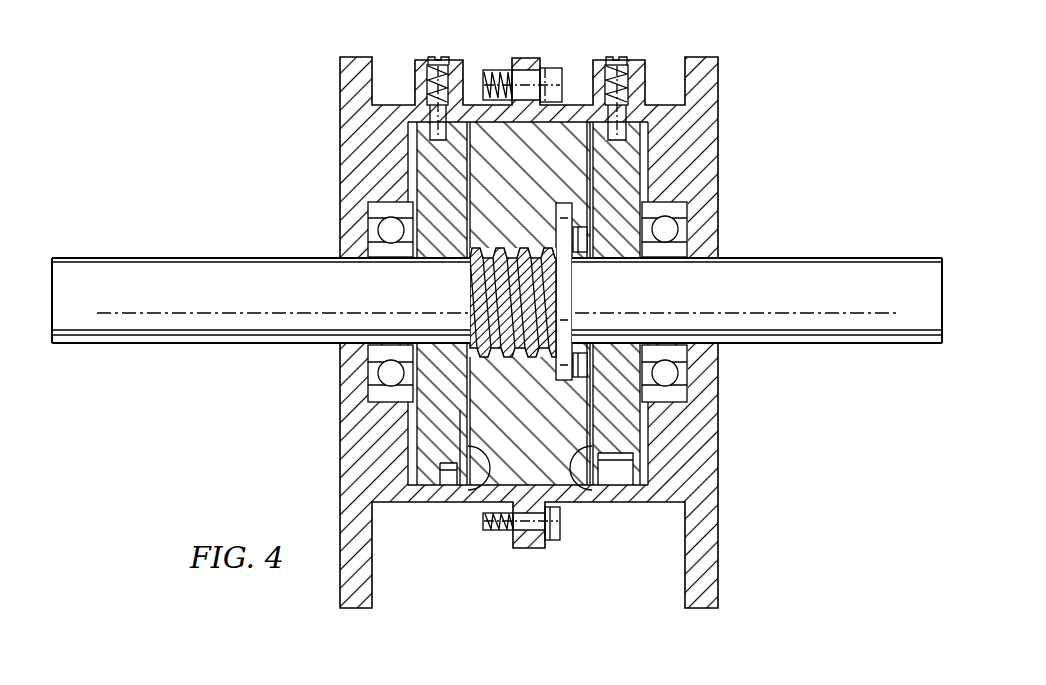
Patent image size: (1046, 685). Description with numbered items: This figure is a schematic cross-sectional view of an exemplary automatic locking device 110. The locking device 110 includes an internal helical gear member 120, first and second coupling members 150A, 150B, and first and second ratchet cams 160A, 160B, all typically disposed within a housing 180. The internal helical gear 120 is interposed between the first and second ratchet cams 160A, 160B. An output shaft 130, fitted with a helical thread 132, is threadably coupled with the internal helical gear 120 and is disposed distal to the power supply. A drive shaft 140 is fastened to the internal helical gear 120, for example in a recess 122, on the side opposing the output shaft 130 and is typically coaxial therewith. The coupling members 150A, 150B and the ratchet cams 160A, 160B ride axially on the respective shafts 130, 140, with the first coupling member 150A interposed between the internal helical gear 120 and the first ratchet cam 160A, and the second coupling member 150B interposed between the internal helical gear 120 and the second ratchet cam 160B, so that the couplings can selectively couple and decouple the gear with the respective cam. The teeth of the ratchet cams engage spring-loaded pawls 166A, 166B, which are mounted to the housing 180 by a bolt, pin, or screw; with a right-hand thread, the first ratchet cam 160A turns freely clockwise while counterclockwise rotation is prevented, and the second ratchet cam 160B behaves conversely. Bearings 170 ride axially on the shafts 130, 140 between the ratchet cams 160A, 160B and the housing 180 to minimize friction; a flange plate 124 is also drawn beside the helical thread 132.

The automatic locking device 110 is at (202, 150).
The internal helical gear member 120 is at (562, 140).
The recess 122 is at (548, 365).
The flange plate 124 is at (556, 212).
The output shaft 130 is at (122, 256).
The helical thread 132 is at (498, 332).
The drive shaft 140 is at (860, 256).
The first coupling member 150A is at (466, 498).
The second coupling member 150B is at (573, 485).
The first ratchet cam 160A is at (437, 433).
The second ratchet cam 160B is at (622, 422).
The spring-loaded pawl 166A is at (417, 100).
The spring-loaded pawl 166B is at (643, 98).
The bearings 170 is at (385, 212).
The housing 180 is at (340, 113).